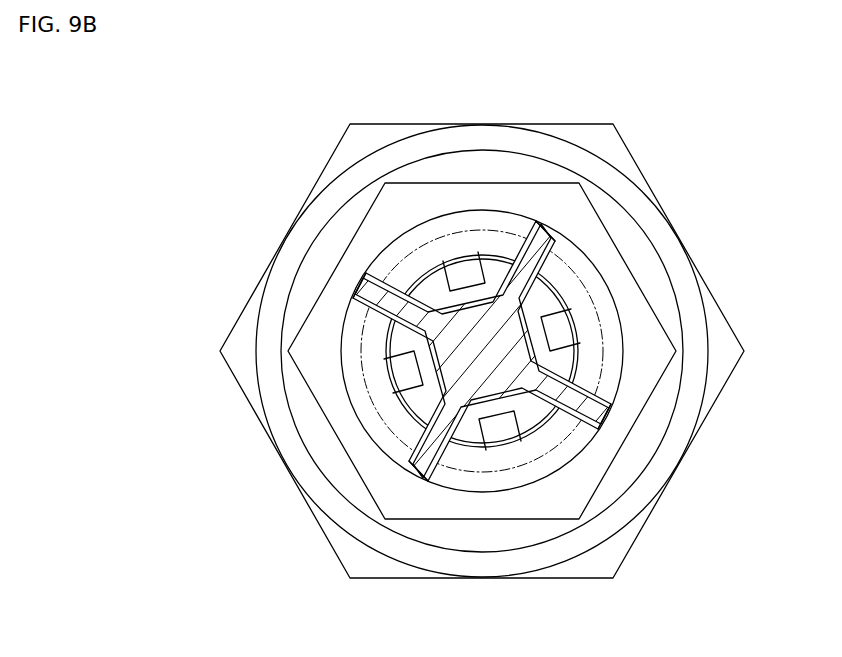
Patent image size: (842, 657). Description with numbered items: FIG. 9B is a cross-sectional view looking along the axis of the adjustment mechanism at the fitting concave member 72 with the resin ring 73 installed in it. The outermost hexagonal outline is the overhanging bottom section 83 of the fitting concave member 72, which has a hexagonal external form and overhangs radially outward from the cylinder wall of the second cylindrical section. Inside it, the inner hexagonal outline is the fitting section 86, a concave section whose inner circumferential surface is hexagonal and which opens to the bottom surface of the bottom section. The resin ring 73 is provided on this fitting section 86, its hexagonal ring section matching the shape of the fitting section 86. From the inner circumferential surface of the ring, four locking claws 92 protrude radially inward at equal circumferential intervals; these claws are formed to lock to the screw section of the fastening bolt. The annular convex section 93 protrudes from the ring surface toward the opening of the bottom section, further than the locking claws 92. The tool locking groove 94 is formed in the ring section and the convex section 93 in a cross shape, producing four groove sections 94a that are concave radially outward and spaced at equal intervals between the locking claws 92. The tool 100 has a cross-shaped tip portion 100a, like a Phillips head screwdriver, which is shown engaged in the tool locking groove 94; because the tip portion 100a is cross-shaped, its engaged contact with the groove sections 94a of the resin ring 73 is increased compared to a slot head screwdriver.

The fitting concave member 72 is at (336, 134).
The resin ring 73 is at (659, 322).
The overhanging bottom section 83 is at (735, 348).
The fitting section 86 is at (638, 408).
The locking claws 92 is at (463, 262).
The convex section 93 is at (345, 333).
The tool locking groove 94 is at (590, 409).
The groove sections 94a is at (528, 258).
The tool 100 is at (392, 450).
The tip portion 100a is at (432, 446).